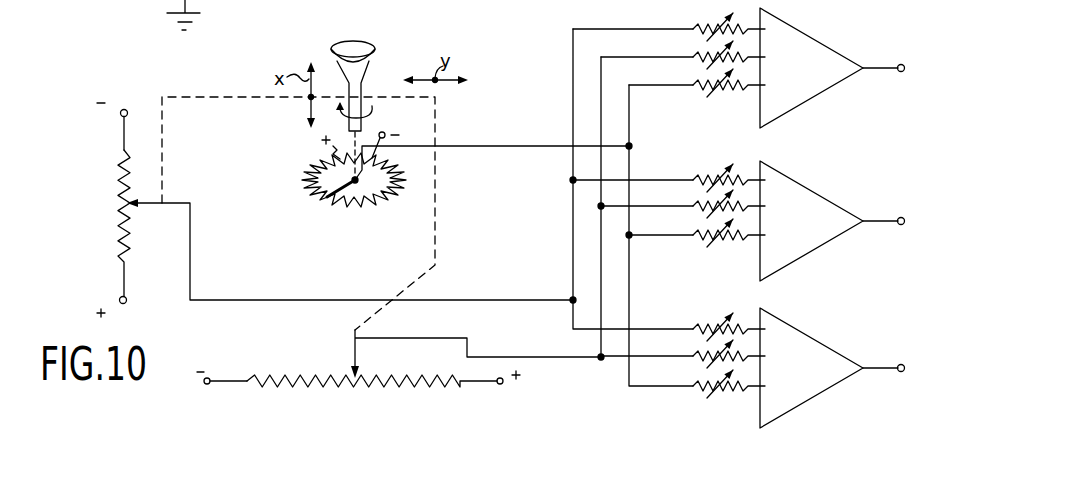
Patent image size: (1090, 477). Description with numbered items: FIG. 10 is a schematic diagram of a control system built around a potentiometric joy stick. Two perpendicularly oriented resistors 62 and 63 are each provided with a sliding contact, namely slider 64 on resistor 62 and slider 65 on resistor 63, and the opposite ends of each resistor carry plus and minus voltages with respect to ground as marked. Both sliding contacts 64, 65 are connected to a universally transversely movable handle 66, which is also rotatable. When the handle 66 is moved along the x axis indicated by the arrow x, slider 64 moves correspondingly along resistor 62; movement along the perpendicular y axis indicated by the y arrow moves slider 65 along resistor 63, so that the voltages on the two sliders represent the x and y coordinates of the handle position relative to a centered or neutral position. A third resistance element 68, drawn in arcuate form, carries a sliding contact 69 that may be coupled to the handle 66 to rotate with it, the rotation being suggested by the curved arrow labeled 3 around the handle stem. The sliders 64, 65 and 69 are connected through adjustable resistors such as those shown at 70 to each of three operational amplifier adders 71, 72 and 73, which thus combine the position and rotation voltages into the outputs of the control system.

The resistor 62 is at (118, 158).
The sliding contact 64 is at (137, 206).
The resistor 63 is at (293, 386).
The sliding contact 65 is at (353, 370).
The handle 66 is at (373, 45).
The third resistance element 68 is at (395, 191).
The sliding contact 69 is at (477, 164).
The adjustable resistors 70 is at (700, 53).
The operational amplifier adder 71 is at (802, 73).
The operational amplifier adder 72 is at (800, 222).
The operational amplifier adder 73 is at (800, 370).
The rotation indicator 3 is at (364, 112).